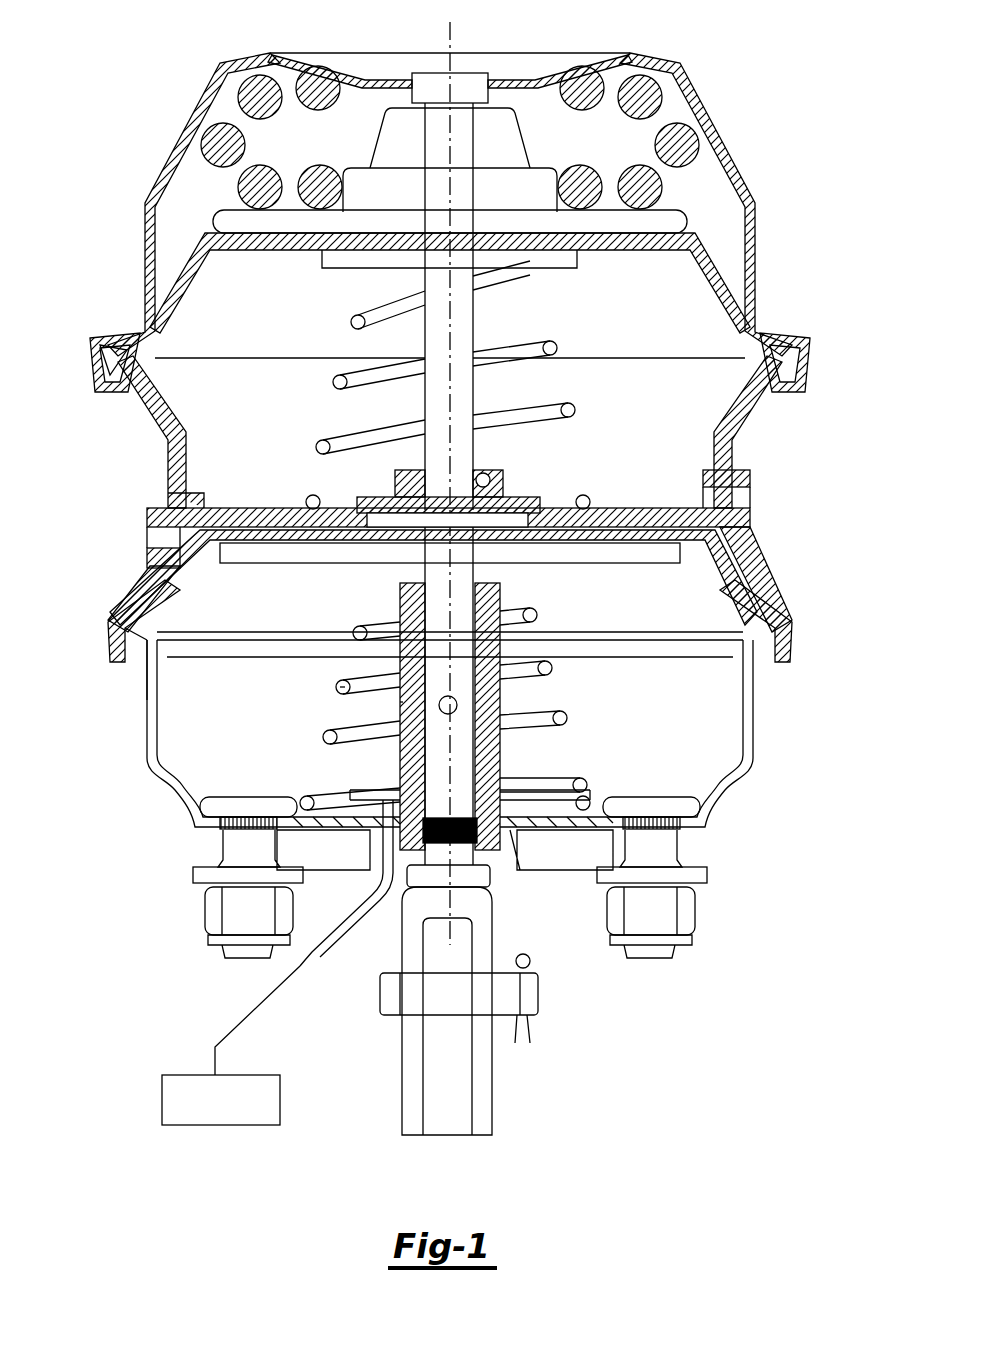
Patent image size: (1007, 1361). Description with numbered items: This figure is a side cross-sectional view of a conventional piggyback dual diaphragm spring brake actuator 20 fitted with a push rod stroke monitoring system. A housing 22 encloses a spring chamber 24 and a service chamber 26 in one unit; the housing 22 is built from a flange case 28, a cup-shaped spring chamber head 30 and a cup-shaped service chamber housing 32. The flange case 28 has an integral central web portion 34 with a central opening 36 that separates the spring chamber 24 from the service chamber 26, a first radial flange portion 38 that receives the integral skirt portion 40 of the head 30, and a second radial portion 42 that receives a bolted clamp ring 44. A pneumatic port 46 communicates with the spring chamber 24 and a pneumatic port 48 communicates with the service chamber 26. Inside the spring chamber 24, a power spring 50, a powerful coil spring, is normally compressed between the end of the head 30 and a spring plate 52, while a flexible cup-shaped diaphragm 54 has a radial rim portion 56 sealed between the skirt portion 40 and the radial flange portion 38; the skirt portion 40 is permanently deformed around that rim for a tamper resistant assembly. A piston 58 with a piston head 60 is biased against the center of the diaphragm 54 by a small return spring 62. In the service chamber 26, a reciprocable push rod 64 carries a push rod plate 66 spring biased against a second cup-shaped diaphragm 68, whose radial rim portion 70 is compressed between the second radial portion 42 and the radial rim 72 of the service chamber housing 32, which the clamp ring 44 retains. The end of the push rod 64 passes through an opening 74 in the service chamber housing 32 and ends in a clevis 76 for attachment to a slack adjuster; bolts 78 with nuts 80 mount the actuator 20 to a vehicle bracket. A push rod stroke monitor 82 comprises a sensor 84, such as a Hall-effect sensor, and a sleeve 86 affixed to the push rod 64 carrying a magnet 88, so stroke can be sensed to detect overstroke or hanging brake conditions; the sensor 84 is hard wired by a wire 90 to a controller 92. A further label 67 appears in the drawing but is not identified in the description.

The spring brake actuator 20 is at (118, 130).
The housing 22 is at (763, 240).
The spring chamber 24 is at (687, 407).
The service chamber 26 is at (697, 733).
The flange case 28 is at (167, 440).
The spring chamber head 30 is at (727, 147).
The service chamber housing 32 is at (147, 758).
The central web portion 34 is at (250, 510).
The central opening 36 is at (487, 477).
The first radial flange portion 38 is at (125, 380).
The integral skirt portion 40 is at (95, 345).
The second radial portion 42 is at (753, 607).
The bolted clamp ring 44 is at (793, 637).
The pneumatic port 46 is at (743, 498).
The pneumatic port 48 is at (157, 543).
The power spring 50 is at (587, 78).
The spring plate 52 is at (682, 220).
The diaphragm 54 is at (257, 248).
The radial rim portion 56 is at (817, 350).
The piston 58 is at (470, 318).
The piston head 60 is at (350, 264).
The return spring 62 is at (337, 382).
The push rod 64 is at (502, 600).
The push rod plate 66 is at (323, 557).
The spring coil 67 is at (340, 687).
The diaphragm 68 is at (183, 600).
The radial rim portion 70 is at (115, 625).
The radial rim 72 is at (120, 655).
The opening 74 is at (513, 836).
The clevis 76 is at (485, 1075).
The bolts 78 is at (233, 847).
The nuts 80 is at (212, 912).
The push rod stroke monitor 82 is at (530, 756).
The sensor 84 is at (383, 787).
The sleeve 86 is at (502, 697).
The magnet 88 is at (403, 702).
The wire 90 is at (333, 937).
The controller 92 is at (247, 1125).